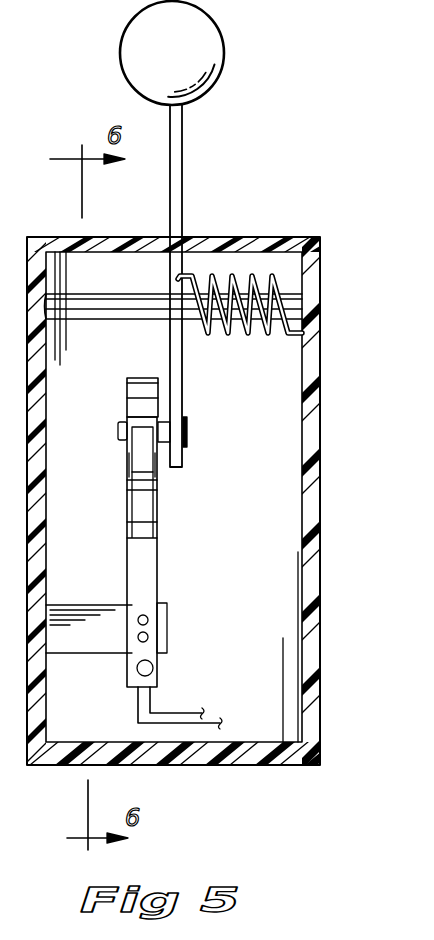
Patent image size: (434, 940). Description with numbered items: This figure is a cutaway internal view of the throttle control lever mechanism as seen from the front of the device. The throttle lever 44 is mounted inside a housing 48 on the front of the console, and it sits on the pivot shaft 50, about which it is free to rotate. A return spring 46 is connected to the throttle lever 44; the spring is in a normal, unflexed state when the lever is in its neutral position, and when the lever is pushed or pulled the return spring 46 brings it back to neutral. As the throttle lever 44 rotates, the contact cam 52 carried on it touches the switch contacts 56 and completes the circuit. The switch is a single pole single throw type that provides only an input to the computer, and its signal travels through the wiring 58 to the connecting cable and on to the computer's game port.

The throttle lever 44 is at (224, 42).
The return spring 46 is at (238, 340).
The housing 48 is at (321, 445).
The pivot shaft 50 is at (129, 293).
The contact cam 52 is at (127, 388).
The switch contacts 56 is at (133, 552).
The wiring 58 is at (261, 690).